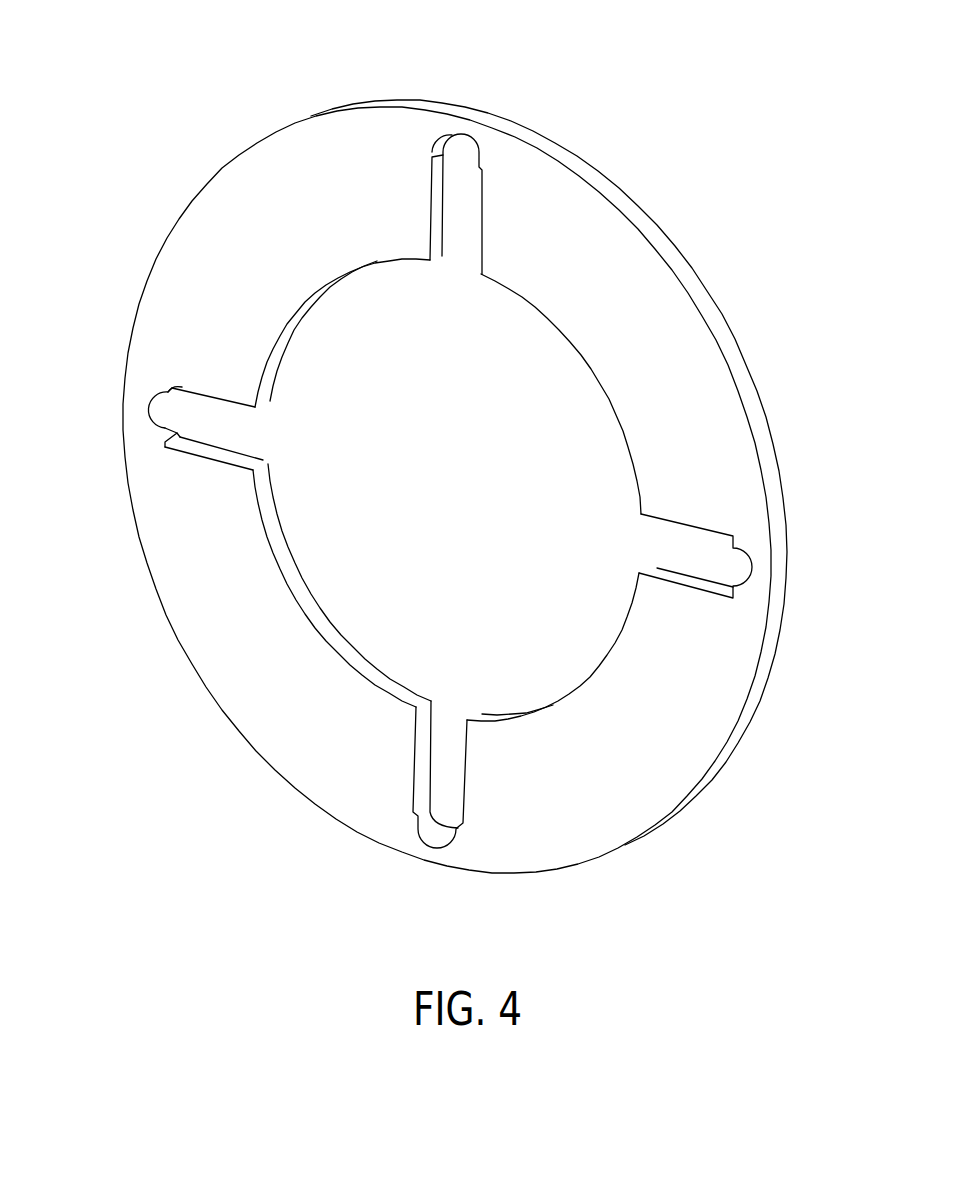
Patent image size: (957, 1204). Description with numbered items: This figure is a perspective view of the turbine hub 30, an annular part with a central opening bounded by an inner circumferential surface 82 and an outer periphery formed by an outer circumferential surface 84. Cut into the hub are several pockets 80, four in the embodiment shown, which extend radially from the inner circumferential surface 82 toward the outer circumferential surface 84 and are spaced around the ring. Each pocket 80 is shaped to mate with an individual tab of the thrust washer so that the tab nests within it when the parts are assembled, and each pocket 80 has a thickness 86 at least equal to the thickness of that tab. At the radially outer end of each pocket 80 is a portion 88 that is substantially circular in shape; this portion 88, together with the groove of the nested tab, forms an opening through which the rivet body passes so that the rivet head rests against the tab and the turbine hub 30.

The turbine hub 30 is at (409, 458).
The pocket 80 is at (392, 462).
The inner circumferential surface 82 is at (272, 375).
The outer circumferential surface 84 is at (270, 137).
The thickness 86 is at (197, 452).
The portion 88 is at (160, 418).